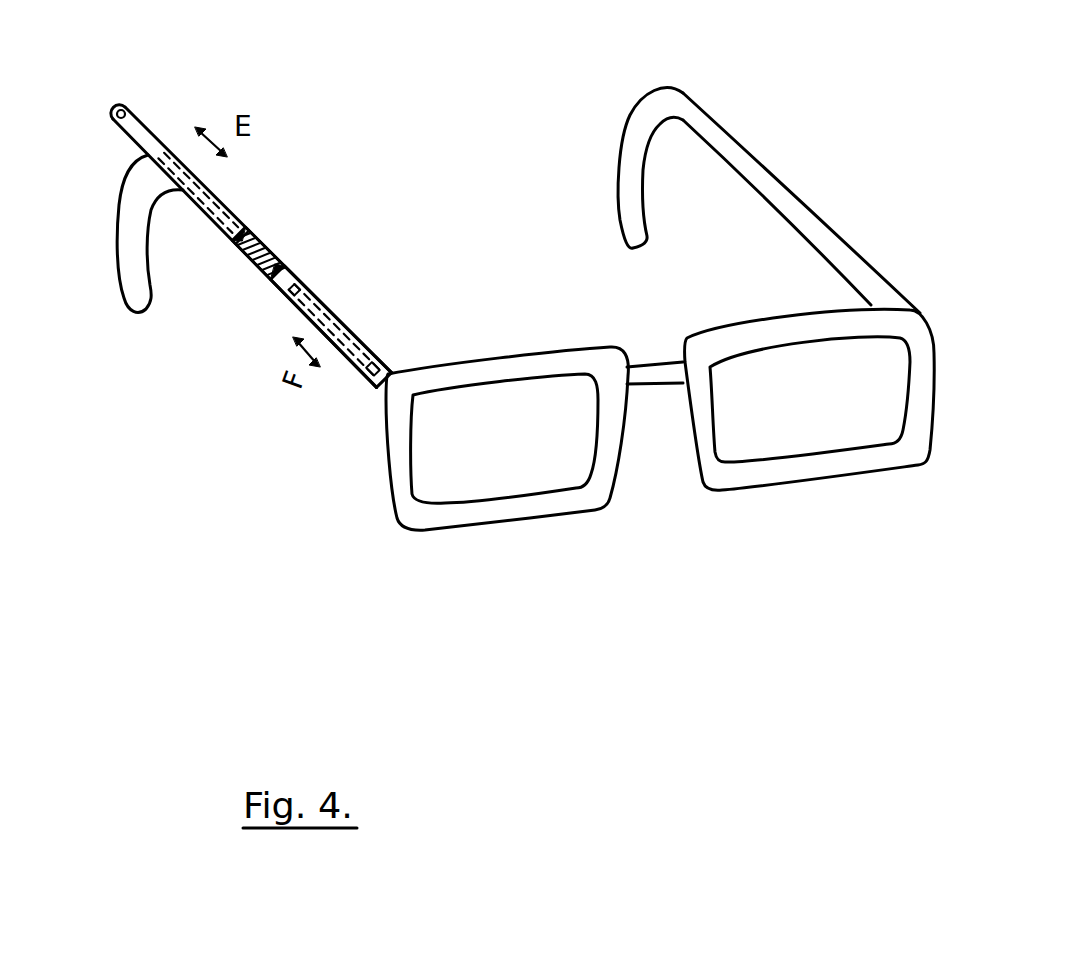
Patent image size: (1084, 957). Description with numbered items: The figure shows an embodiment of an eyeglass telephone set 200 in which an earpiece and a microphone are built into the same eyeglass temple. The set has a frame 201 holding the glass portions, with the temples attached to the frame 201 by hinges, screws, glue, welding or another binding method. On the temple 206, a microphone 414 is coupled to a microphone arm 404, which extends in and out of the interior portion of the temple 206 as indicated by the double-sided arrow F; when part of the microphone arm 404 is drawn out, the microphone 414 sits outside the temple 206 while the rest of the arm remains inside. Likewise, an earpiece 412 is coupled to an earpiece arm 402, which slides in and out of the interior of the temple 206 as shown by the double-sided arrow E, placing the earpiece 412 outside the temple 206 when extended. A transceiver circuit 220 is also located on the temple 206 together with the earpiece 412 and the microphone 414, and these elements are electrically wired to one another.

The eyeglass telephone set 200 is at (763, 70).
The frame 201 is at (575, 511).
The second temple 206 is at (260, 229).
The transceiver circuit 220 is at (247, 257).
The earpiece arm 402 is at (143, 125).
The microphone arm 404 is at (328, 298).
The earpiece 412 is at (113, 112).
The microphone 414 is at (367, 382).